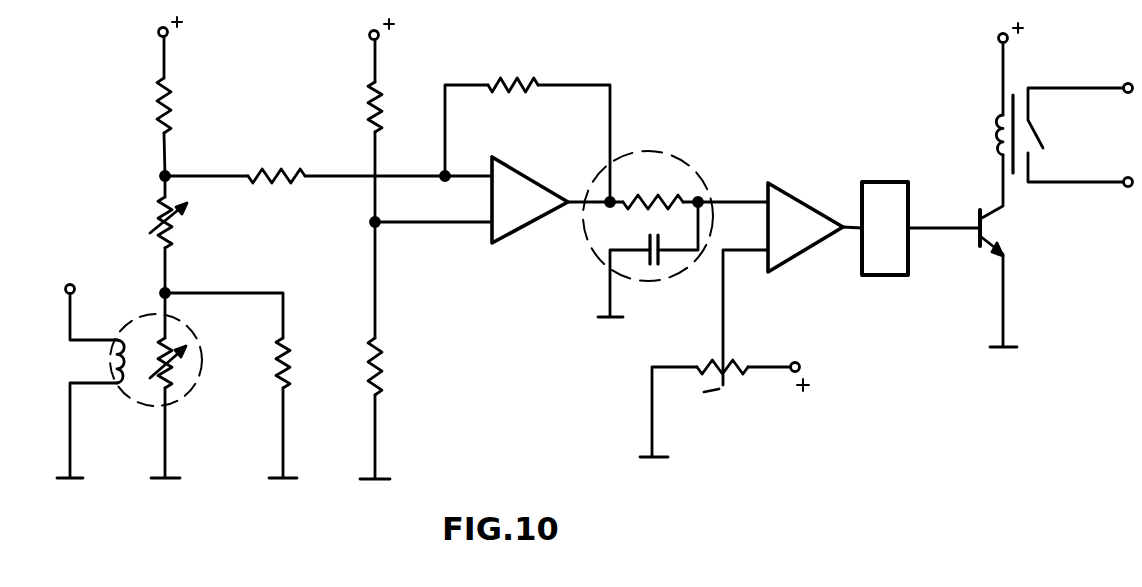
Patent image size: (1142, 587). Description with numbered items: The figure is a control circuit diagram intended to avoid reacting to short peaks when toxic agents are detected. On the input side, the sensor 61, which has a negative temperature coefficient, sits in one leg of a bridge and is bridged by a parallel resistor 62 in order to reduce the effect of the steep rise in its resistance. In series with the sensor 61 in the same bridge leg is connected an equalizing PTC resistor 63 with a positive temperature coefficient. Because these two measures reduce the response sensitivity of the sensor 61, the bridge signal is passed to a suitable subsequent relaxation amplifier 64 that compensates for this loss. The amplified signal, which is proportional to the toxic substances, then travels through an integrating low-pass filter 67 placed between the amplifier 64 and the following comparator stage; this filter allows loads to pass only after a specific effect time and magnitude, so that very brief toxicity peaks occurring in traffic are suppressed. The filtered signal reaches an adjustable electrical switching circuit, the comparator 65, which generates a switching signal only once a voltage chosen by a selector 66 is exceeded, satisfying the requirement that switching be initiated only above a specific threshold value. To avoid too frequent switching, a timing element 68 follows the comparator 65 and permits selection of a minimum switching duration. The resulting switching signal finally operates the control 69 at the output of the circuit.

The sensor 61 is at (187, 397).
The parallel resistor 62 is at (289, 376).
The equalizing PTC resistor 63 is at (158, 208).
The relaxation amplifier 64 is at (522, 208).
The comparator 65 is at (797, 223).
The selector 66 is at (735, 380).
The integrating low-pass filter 67 is at (680, 157).
The timing element 68 is at (882, 203).
The control 69 is at (1078, 88).